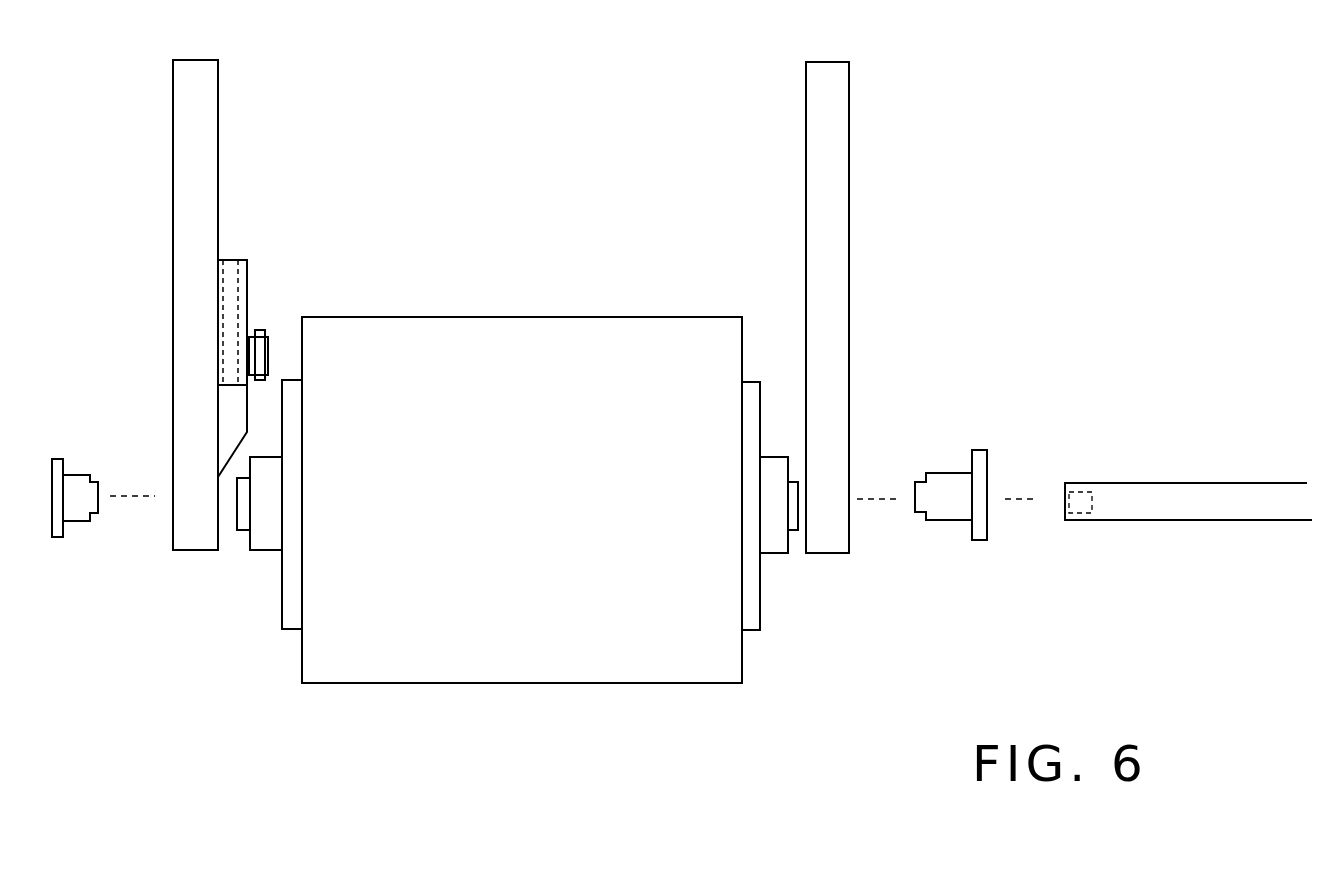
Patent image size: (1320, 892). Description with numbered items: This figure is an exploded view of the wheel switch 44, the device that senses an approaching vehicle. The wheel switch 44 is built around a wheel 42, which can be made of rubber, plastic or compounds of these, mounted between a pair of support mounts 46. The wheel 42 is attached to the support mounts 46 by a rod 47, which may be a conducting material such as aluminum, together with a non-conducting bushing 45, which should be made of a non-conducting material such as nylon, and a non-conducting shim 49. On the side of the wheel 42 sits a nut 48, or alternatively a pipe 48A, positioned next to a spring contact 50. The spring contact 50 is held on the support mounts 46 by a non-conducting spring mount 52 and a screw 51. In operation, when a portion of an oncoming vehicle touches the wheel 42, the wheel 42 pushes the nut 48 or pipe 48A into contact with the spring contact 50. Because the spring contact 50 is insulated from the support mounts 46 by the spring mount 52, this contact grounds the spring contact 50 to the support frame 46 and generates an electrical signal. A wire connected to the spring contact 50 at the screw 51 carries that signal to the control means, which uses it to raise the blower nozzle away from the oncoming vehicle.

The wheel 42 is at (722, 683).
The wheel switch 44 is at (1065, 680).
The non-conducting bushing 45 is at (78, 522).
The support mounts 46 is at (177, 276).
The rod 47 is at (1095, 482).
The nut 48 is at (263, 553).
The pipe 48A is at (237, 532).
The non-conducting shim 49 is at (290, 630).
The spring contact 50 is at (267, 444).
The screw 51 is at (245, 395).
The non-conducting spring mount 52 is at (247, 259).